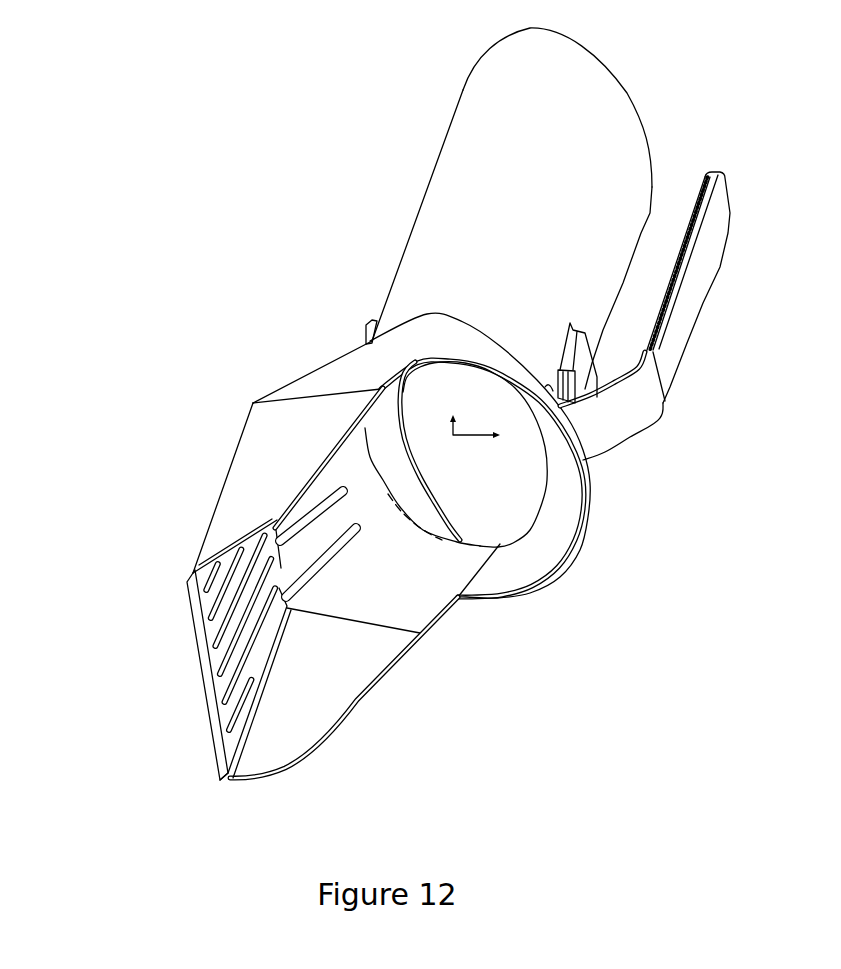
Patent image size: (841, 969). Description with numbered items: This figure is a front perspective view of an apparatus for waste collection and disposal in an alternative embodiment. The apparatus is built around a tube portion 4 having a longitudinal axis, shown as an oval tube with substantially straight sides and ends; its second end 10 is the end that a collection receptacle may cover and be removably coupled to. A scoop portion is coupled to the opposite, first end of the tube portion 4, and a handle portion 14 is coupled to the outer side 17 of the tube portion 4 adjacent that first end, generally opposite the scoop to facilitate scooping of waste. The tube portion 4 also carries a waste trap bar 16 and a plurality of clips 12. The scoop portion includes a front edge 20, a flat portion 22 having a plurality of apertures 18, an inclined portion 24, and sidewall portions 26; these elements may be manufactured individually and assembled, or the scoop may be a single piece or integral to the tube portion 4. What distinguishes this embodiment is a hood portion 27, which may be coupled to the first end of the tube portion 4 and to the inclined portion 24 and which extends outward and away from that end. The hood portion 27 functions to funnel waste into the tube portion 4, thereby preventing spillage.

The tube portion 4 is at (378, 132).
The second end 10 is at (590, 48).
The clips 12 is at (358, 326).
The handle portion 14 is at (738, 351).
The waste trap bar 16 is at (400, 467).
The outer side 17 is at (463, 99).
The apertures 18 is at (345, 494).
The front edge 20 is at (193, 610).
The flat portion 22 is at (226, 738).
The inclined portion 24 is at (337, 375).
The sidewall portions 26 is at (250, 453).
The hood portion 27 is at (552, 540).